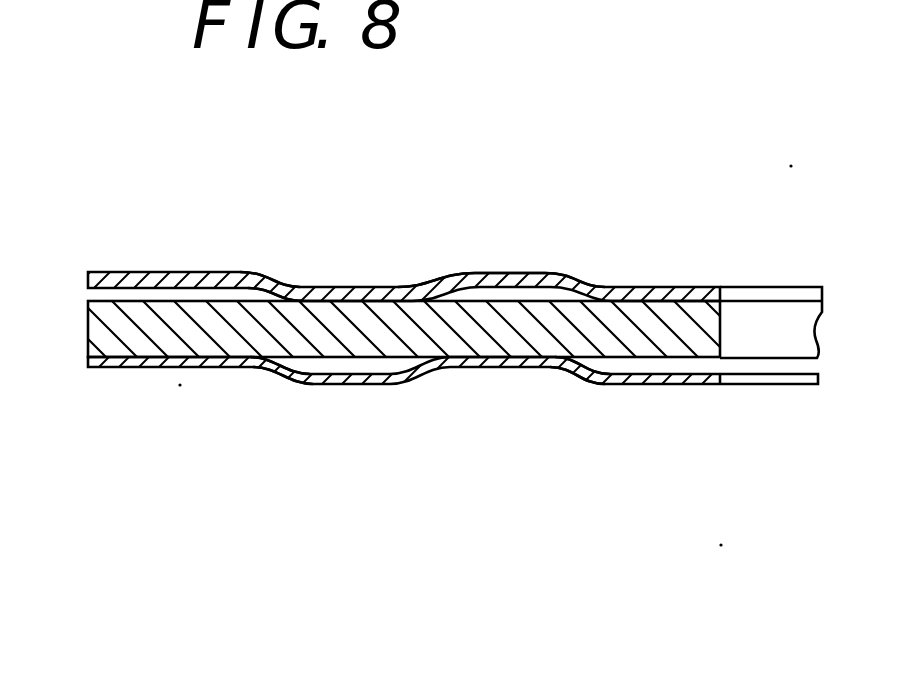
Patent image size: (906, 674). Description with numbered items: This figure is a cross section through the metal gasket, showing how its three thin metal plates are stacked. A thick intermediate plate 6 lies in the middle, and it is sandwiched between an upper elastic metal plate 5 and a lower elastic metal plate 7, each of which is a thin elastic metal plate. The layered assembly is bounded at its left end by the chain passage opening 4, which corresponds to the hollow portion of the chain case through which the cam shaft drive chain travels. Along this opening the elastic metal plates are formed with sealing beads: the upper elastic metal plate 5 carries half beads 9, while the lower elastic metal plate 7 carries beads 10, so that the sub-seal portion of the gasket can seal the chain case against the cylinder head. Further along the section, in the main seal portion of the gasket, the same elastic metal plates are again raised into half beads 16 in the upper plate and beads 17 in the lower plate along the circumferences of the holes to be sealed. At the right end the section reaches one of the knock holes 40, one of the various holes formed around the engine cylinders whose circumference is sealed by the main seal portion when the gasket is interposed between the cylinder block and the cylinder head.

The chain passage opening 4 is at (88, 323).
The elastic metal plate 5 is at (172, 278).
The intermediate plate 6 is at (627, 337).
The elastic metal plate 7 is at (210, 363).
The half beads 9 is at (302, 290).
The beads 10 is at (298, 375).
The half beads 16 is at (517, 282).
The beads 17 is at (562, 368).
The knock holes 40 is at (720, 333).